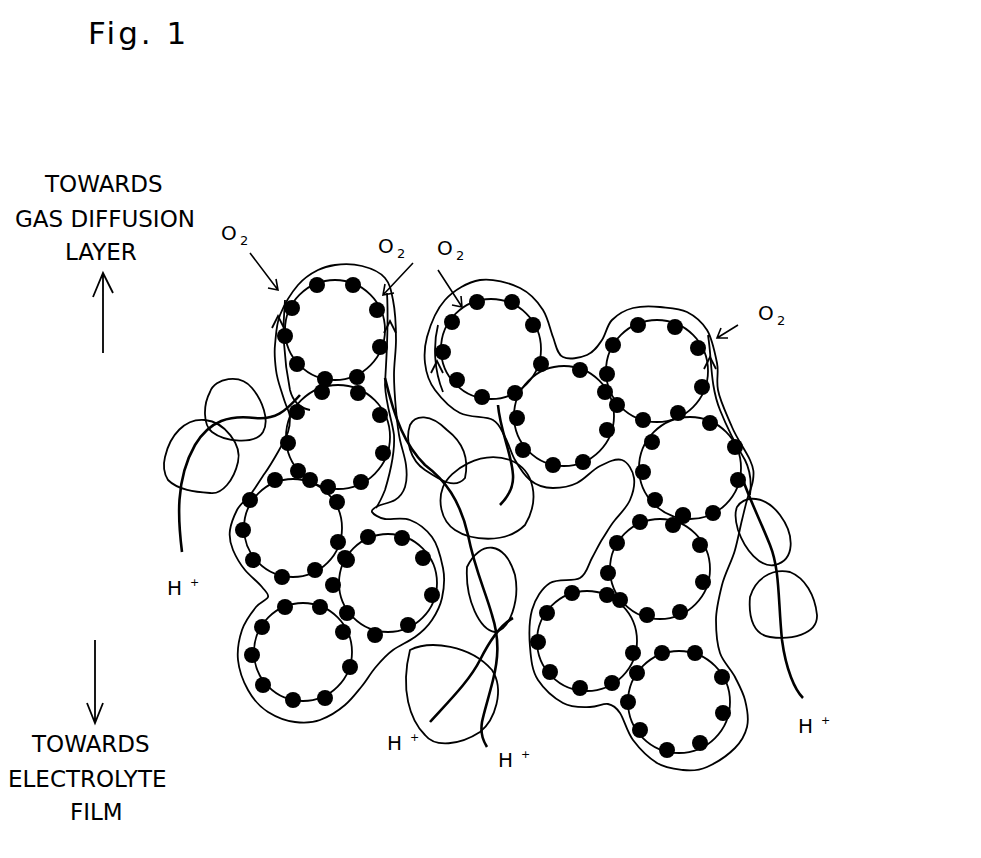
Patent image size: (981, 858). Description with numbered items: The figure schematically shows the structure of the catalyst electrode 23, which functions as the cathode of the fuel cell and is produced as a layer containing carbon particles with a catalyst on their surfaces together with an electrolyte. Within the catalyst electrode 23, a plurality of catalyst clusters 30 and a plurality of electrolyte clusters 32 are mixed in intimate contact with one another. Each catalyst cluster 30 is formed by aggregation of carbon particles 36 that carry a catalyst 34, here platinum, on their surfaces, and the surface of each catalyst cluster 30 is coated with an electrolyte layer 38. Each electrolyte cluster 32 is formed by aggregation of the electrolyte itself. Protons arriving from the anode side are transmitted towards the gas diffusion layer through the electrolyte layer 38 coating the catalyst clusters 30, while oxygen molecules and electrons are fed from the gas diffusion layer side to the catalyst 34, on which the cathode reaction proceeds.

The catalyst electrode 23 is at (845, 279).
The catalyst cluster 30 is at (695, 264).
The electrolyte cluster 32 is at (447, 771).
The catalyst 34 is at (705, 745).
The carbon particles 36 is at (700, 458).
The electrolyte layer 38 is at (538, 310).